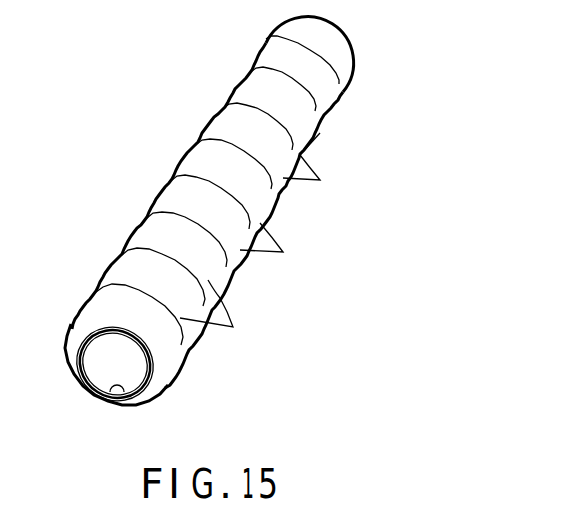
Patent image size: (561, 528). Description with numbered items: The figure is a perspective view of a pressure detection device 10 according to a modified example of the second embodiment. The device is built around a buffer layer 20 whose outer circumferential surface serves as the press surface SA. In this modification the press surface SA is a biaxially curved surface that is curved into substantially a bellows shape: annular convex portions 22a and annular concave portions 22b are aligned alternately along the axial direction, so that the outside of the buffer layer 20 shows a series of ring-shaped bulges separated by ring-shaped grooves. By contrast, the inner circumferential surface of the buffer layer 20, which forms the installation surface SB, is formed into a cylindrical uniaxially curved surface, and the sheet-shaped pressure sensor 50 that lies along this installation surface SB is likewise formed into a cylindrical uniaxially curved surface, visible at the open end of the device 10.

The device 10 is at (176, 102).
The buffer layer 20 is at (164, 190).
The annular convex portions 22a is at (340, 50).
The annular concave portions 22b is at (340, 78).
The press surface SA is at (310, 130).
The installation surface SB is at (125, 394).
The sheet-shaped pressure sensor 50 is at (97, 360).